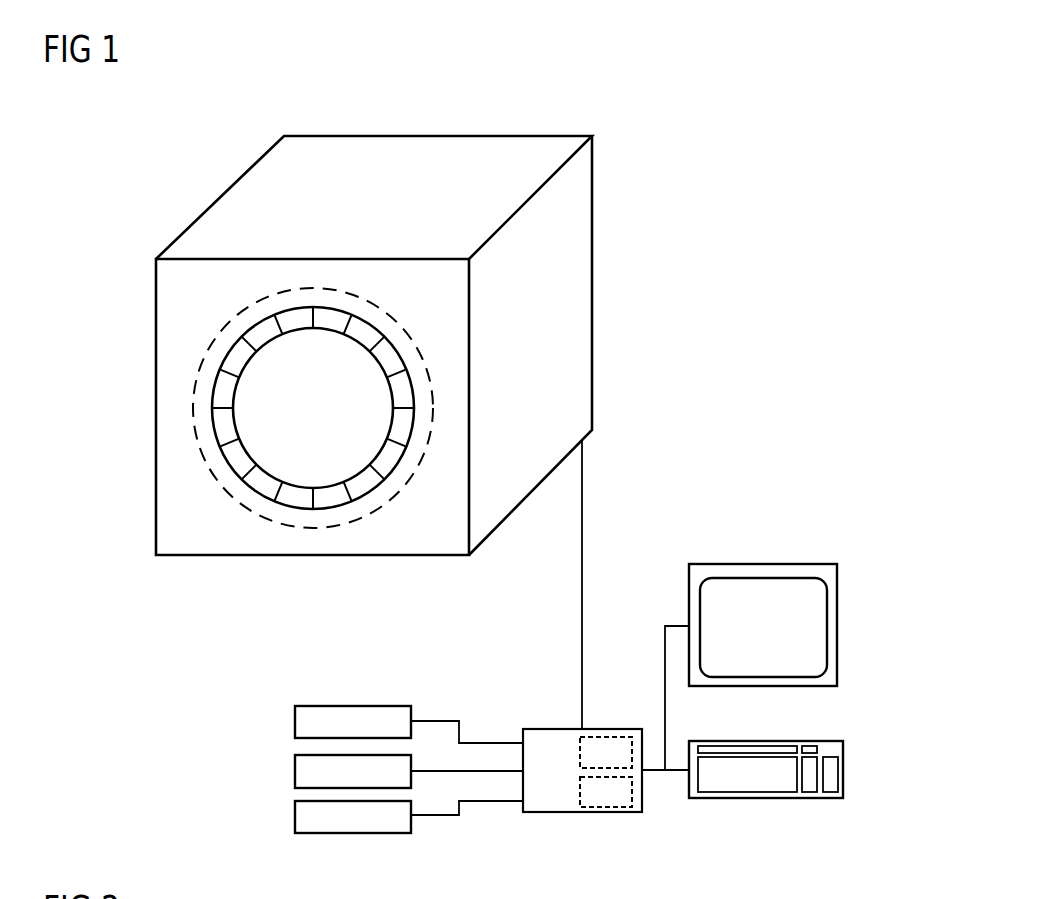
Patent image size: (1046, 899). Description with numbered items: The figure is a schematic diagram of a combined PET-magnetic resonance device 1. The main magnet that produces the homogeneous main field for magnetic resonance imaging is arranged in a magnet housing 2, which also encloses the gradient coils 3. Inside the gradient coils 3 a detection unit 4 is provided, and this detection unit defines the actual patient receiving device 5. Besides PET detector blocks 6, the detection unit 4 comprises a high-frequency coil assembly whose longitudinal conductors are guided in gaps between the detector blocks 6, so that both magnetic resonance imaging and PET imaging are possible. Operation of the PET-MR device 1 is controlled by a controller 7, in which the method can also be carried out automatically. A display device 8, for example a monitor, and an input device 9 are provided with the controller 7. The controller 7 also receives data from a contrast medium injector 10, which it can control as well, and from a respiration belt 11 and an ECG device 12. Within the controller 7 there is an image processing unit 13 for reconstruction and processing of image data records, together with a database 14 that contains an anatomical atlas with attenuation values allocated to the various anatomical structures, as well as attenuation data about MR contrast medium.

The combined PET-magnetic resonance device 1 is at (196, 146).
The magnet housing 2 is at (583, 213).
The gradient coils 3 is at (377, 303).
The detection unit 4 is at (262, 501).
The patient receiving device 5 is at (328, 424).
The PET detector blocks 6 is at (327, 317).
The controller 7 is at (545, 795).
The display device 8 is at (740, 563).
The input device 9 is at (742, 800).
The contrast medium injector 10 is at (295, 722).
The respiration belt 11 is at (295, 771).
The ECG device 12 is at (295, 815).
The image processing unit 13 is at (612, 740).
The database 14 is at (612, 795).